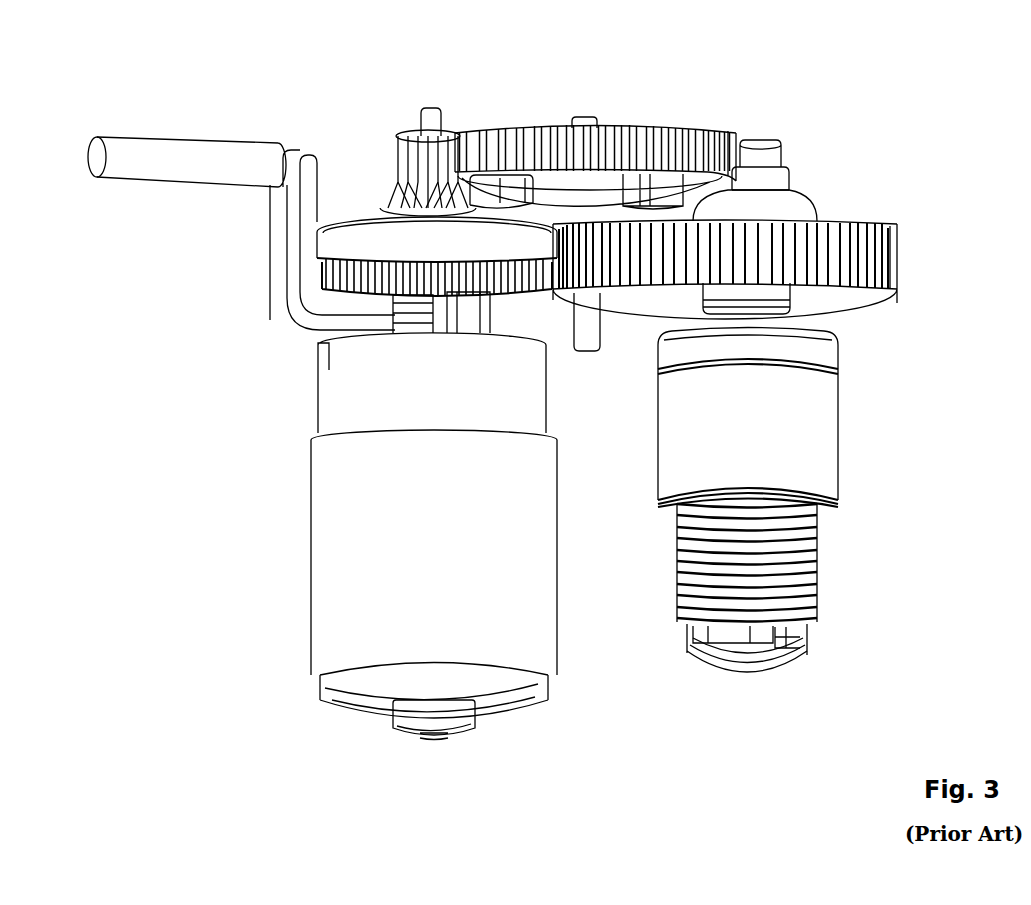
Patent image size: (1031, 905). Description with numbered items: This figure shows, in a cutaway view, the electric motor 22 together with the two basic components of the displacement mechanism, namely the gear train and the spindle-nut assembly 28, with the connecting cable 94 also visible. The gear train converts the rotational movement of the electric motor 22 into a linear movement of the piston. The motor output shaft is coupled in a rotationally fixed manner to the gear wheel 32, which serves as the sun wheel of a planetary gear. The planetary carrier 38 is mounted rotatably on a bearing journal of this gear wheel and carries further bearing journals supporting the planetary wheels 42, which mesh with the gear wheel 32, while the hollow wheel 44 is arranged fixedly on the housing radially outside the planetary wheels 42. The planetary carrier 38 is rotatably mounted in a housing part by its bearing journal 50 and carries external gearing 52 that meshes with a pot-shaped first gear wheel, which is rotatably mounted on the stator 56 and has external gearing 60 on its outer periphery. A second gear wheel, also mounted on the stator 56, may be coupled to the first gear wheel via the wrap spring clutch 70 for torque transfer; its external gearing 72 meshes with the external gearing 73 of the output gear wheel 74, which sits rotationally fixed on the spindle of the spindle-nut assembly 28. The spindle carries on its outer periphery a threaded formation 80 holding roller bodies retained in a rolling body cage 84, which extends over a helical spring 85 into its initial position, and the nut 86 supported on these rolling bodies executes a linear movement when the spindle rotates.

The electric motor 22 is at (338, 537).
The spindle-nut assembly 28 is at (847, 455).
The gear wheel 32 is at (318, 370).
The planetary carrier 38 is at (398, 208).
The planetary wheels 42 is at (270, 320).
The hollow wheel 44 is at (360, 210).
The bearing journal 50 is at (430, 108).
The external gearing 52 is at (420, 134).
The stator 56 is at (580, 117).
The external gearing 60 is at (673, 127).
The wrap spring clutch 70 is at (740, 663).
The external gearing 72 is at (601, 340).
The external gearing 73 is at (900, 250).
The output gear wheel 74 is at (833, 221).
The threaded formation 80 is at (806, 664).
The rolling body cage 84 is at (688, 633).
The helical spring 85 is at (823, 581).
The nut 86 is at (840, 398).
The connecting cable 94 is at (170, 168).